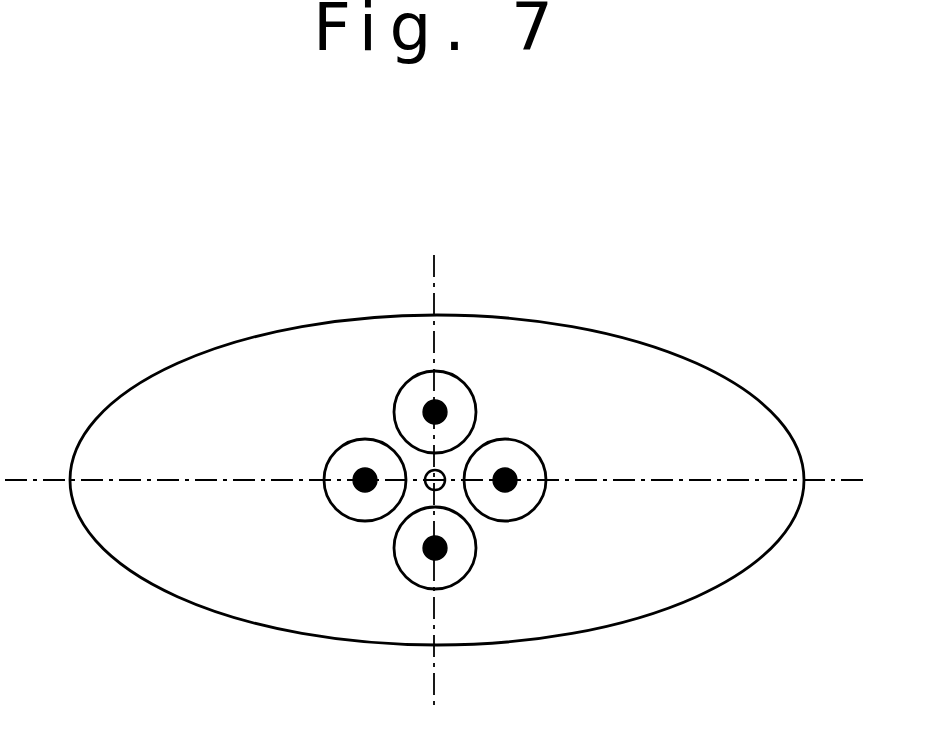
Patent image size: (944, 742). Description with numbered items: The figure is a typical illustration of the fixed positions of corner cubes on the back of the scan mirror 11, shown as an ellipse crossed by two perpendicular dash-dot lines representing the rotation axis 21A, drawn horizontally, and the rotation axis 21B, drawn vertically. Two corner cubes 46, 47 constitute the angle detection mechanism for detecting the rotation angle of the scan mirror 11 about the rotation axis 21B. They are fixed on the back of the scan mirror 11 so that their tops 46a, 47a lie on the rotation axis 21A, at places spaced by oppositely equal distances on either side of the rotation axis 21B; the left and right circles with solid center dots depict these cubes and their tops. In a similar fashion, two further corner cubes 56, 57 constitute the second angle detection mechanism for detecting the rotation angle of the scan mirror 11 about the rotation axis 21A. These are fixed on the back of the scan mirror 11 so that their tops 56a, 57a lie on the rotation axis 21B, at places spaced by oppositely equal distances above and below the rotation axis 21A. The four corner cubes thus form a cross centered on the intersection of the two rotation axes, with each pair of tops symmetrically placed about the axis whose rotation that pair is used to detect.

The scan mirror 11 is at (647, 367).
The rotation axis 21A is at (650, 480).
The rotation axis 21B is at (434, 293).
The corner cube 46 is at (331, 456).
The top of corner cube 46a is at (358, 485).
The corner cube 47 is at (515, 450).
The top of corner cube 47a is at (516, 486).
The corner cube 56 is at (461, 381).
The top of corner cube 56a is at (425, 405).
The corner cube 57 is at (458, 570).
The top of corner cube 57a is at (425, 553).